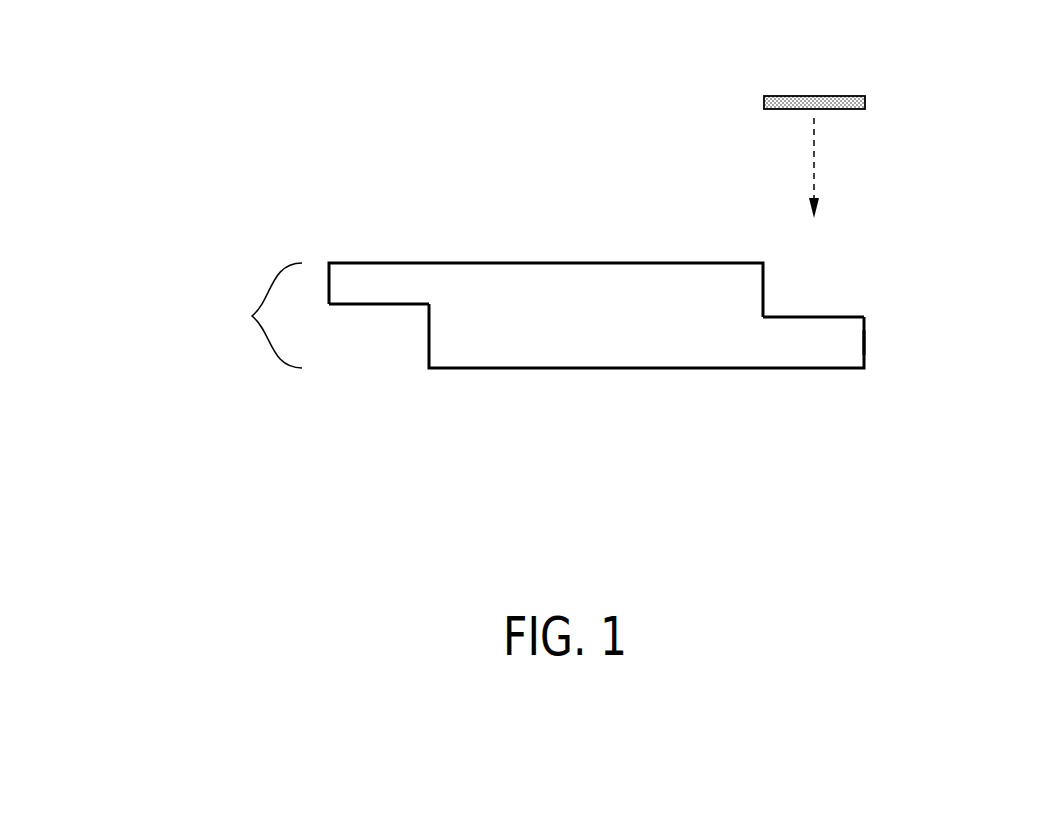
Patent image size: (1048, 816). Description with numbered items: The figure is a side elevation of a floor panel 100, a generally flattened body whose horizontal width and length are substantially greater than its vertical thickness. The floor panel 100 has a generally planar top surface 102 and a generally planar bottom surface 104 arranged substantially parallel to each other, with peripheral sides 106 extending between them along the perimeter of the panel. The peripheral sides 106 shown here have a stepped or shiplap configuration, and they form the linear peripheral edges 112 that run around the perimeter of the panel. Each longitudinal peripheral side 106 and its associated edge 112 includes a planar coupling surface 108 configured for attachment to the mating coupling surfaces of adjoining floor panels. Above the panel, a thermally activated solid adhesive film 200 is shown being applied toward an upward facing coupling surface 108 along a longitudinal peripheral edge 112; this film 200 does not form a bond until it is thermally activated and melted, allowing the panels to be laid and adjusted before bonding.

The floor panel 100 is at (567, 297).
The top surface 102 is at (442, 262).
The bottom surface 104 is at (609, 370).
The peripheral sides 106 is at (252, 316).
The coupling surface 108 is at (347, 311).
The peripheral edges 112 is at (893, 318).
The solid adhesive film 200 is at (865, 102).